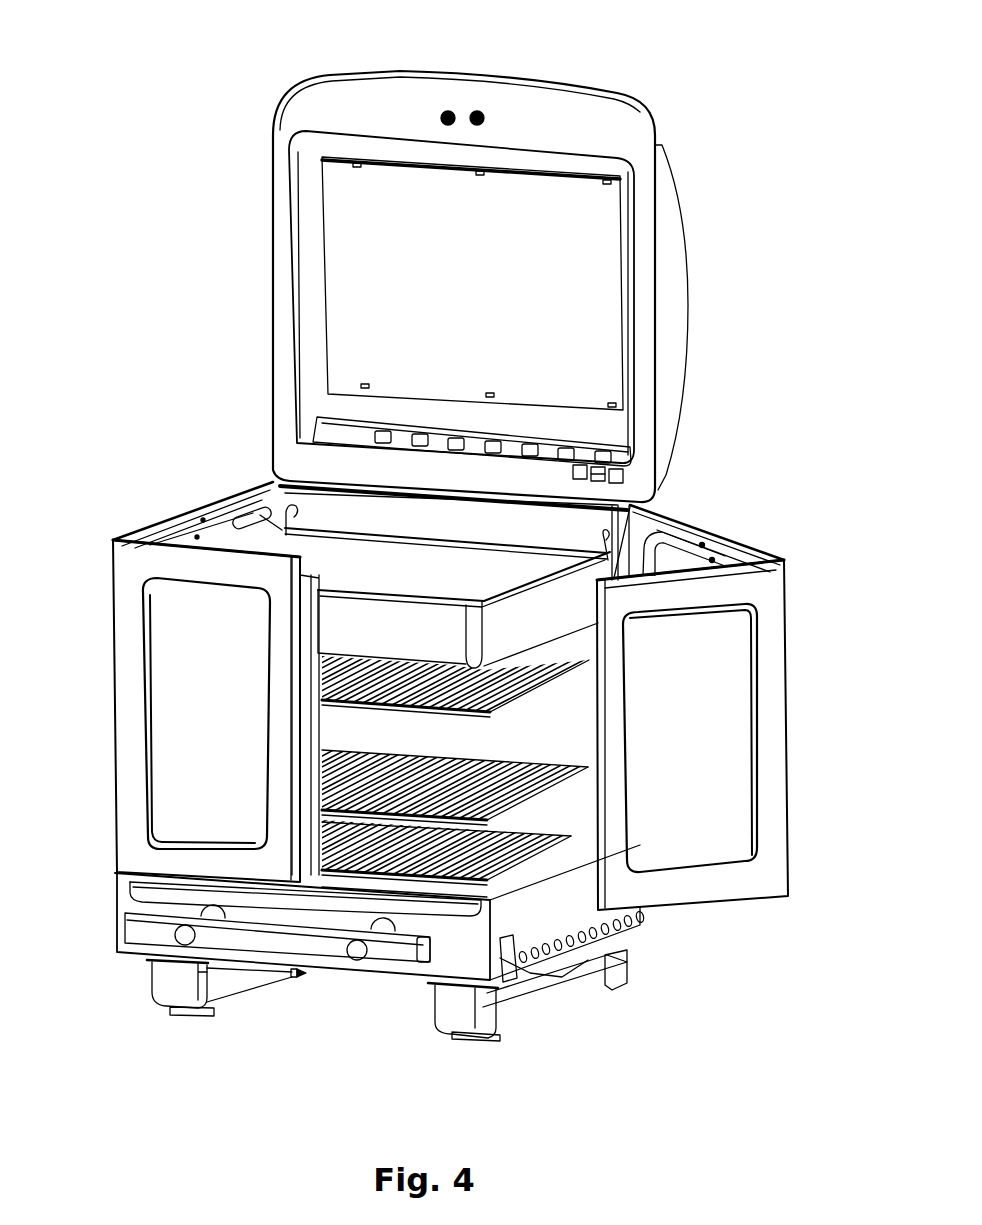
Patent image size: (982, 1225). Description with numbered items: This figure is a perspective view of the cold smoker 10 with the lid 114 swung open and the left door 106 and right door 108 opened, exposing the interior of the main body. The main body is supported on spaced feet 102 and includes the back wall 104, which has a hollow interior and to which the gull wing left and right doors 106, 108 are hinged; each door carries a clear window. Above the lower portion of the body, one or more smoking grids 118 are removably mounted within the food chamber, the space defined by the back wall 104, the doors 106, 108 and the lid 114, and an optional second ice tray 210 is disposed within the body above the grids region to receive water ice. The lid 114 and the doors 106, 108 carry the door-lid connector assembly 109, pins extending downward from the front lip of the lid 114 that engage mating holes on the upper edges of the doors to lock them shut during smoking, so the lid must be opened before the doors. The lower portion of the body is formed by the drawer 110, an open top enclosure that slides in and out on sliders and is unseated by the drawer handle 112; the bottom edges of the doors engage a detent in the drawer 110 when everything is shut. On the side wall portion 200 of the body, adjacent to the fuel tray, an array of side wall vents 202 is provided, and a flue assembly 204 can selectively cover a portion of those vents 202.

The cold smoker 10 is at (166, 328).
The feet 102 is at (500, 1012).
The back wall 104 is at (313, 510).
The left door 106 is at (228, 729).
The right door 108 is at (706, 729).
The door-lid connector assembly 109 is at (479, 104).
The drawer 110 is at (451, 964).
The drawer handle 112 is at (148, 934).
The lid 114 is at (669, 313).
The smoking grids 118 is at (453, 756).
The side wall portion 200 is at (545, 903).
The side wall vents 202 is at (625, 938).
The flue assembly 204 is at (563, 970).
The second ice tray 210 is at (418, 643).